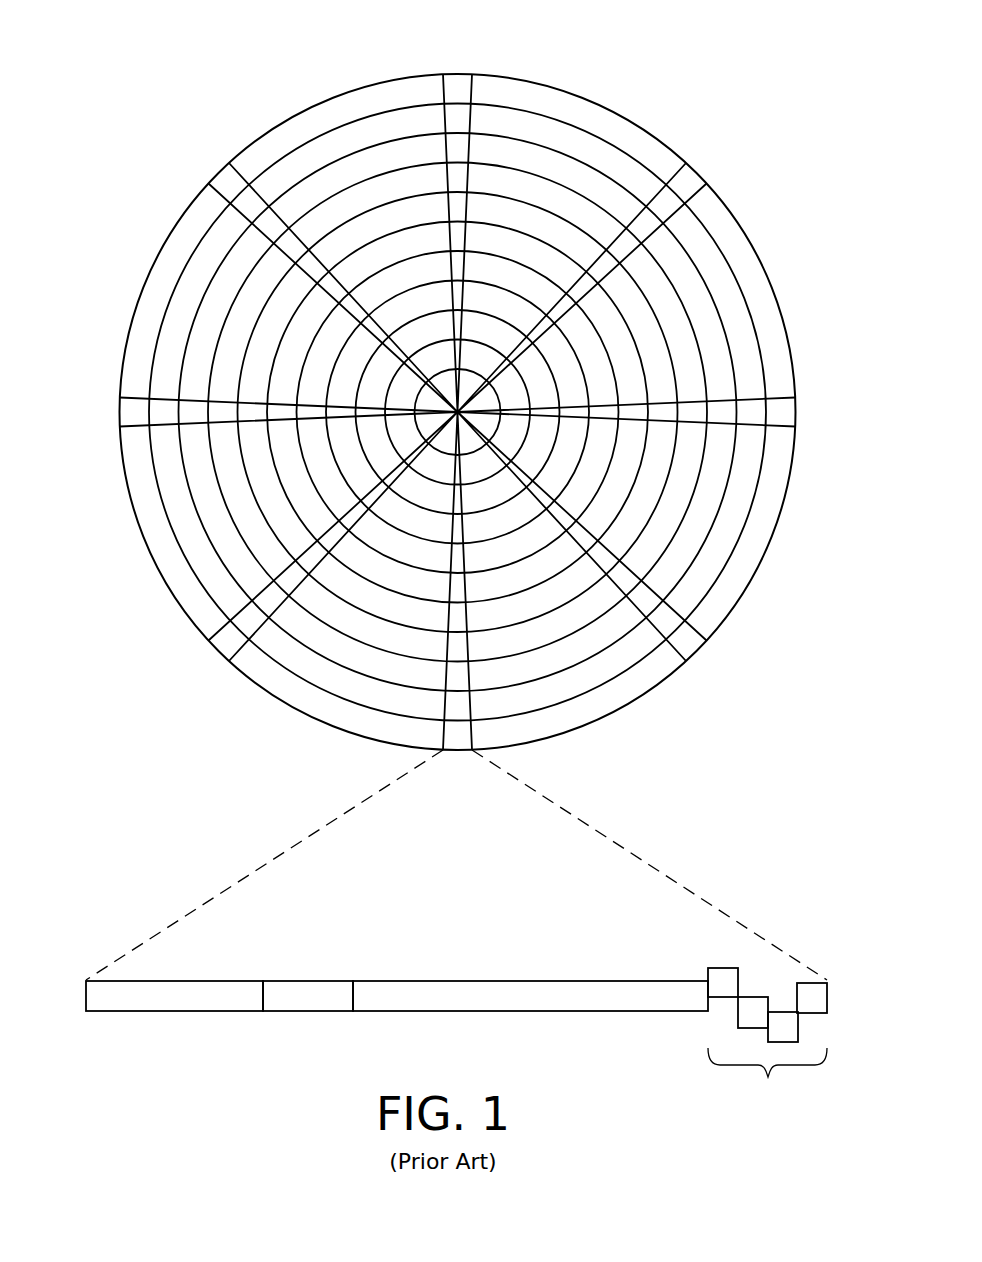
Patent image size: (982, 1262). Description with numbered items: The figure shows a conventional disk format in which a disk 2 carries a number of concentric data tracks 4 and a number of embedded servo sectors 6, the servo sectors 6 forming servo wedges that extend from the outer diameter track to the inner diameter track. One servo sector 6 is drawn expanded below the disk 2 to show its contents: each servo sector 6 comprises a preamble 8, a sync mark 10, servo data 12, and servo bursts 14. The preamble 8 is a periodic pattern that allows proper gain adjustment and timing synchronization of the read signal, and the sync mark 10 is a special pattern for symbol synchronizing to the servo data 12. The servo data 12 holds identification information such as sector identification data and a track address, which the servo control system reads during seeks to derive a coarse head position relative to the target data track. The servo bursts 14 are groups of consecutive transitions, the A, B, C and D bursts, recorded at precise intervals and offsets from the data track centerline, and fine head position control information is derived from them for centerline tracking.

The disk 2 is at (206, 78).
The data tracks 4 is at (573, 143).
The servo sectors 6 is at (459, 86).
The preamble 8 is at (158, 1012).
The sync mark 10 is at (309, 1012).
The servo data 12 is at (520, 1012).
The servo bursts 14 is at (696, 949).